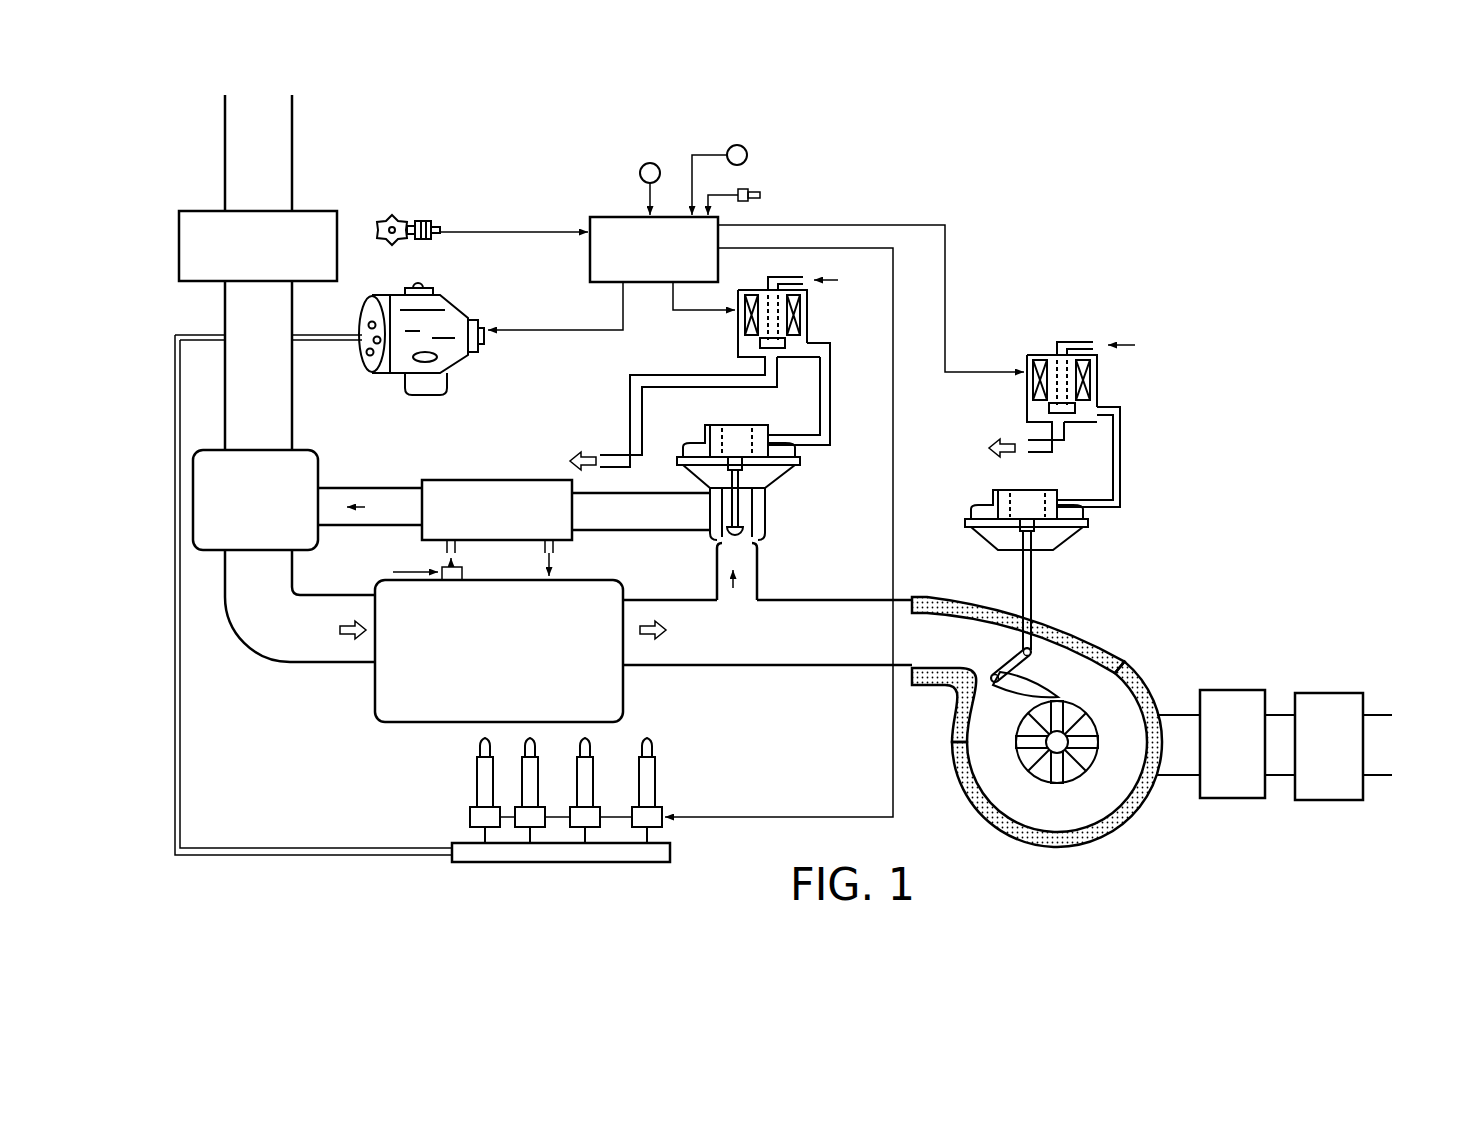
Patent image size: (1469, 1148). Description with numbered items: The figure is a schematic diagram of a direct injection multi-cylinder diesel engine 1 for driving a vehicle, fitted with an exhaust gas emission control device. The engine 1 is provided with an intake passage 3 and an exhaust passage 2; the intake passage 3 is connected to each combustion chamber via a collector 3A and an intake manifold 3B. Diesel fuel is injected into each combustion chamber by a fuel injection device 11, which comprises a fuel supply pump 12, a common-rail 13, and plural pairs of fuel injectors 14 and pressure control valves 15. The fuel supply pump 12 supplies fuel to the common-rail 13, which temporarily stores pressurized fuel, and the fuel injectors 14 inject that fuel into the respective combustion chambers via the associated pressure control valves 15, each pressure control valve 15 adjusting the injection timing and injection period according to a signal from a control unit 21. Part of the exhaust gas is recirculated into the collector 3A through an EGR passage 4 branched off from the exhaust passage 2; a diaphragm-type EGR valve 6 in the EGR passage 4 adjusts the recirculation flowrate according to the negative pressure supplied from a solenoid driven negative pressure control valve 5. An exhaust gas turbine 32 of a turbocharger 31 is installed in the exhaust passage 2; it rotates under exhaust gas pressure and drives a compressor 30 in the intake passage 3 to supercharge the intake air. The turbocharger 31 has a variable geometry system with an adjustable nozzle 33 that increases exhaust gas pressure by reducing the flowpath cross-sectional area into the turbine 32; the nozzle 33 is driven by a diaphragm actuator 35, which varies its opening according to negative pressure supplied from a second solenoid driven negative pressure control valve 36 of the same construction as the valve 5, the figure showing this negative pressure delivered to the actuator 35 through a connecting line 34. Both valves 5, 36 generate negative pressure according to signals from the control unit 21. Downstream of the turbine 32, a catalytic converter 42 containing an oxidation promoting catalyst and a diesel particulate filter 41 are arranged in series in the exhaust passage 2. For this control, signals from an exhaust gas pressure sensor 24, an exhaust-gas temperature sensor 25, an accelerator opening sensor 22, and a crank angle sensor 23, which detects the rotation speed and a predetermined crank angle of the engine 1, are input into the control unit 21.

The diesel engine 1 is at (623, 700).
The exhaust passage 2 is at (816, 668).
The intake passage 3 is at (293, 388).
The collector 3A is at (207, 450).
The intake manifold 3B is at (330, 651).
The exhaust gas recirculation passage 4 is at (745, 583).
The negative pressure control valve 5 is at (807, 326).
The exhaust gas recirculation valve 6 is at (745, 508).
The fuel injection device 11 is at (460, 608).
The fuel supply pump 12 is at (392, 373).
The common-rail 13 is at (670, 855).
The fuel injector 14 is at (656, 771).
The pressure control valve 15 is at (663, 826).
The control unit 21 is at (590, 274).
The accelerator opening sensor 22 is at (650, 161).
The crank angle sensor 23 is at (425, 221).
The exhaust gas pressure sensor 24 is at (764, 196).
The exhaust-gas temperature sensor 25 is at (749, 152).
The compressor 30 is at (330, 210).
The turbocharger 31 is at (718, 471).
The exhaust gas turbine 32 is at (1146, 679).
The adjustable nozzle 33 is at (1055, 700).
The vacuum passage 34 is at (1130, 455).
The diaphragm actuator 35 is at (1088, 548).
The negative pressure control valve 36 is at (1097, 393).
The diesel particulate filter 41 is at (1295, 693).
The catalytic converter 42 is at (1218, 798).